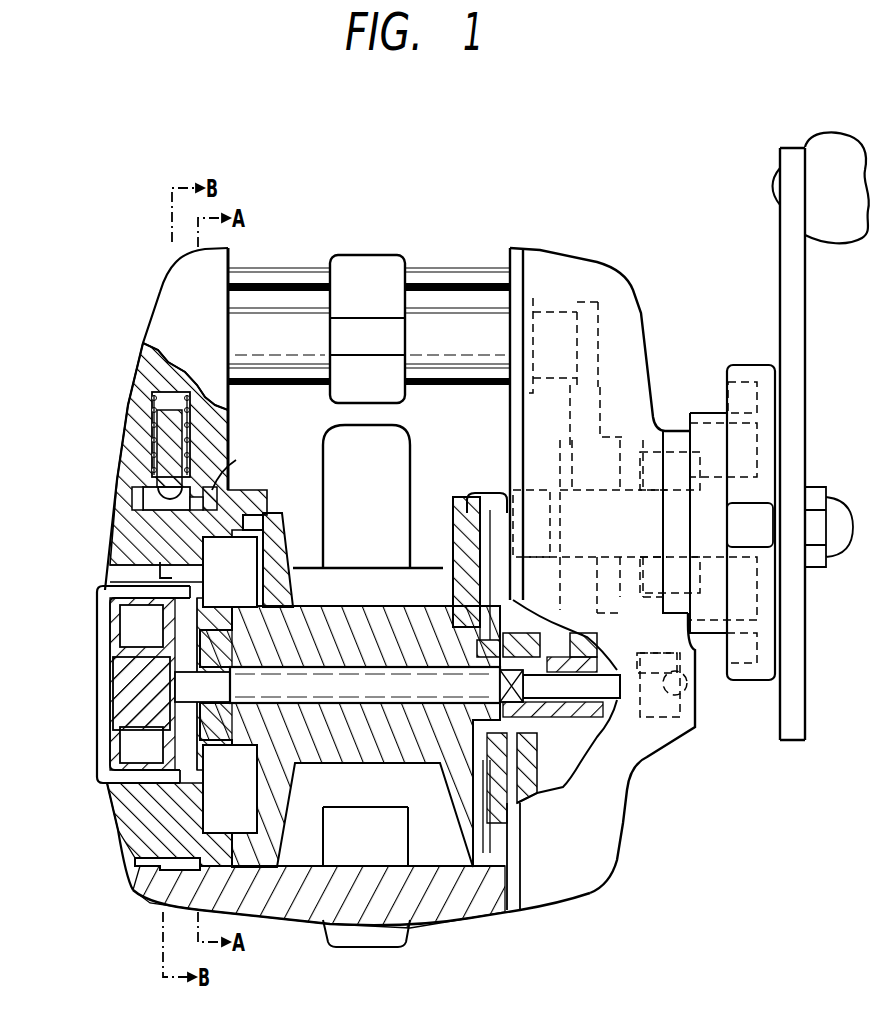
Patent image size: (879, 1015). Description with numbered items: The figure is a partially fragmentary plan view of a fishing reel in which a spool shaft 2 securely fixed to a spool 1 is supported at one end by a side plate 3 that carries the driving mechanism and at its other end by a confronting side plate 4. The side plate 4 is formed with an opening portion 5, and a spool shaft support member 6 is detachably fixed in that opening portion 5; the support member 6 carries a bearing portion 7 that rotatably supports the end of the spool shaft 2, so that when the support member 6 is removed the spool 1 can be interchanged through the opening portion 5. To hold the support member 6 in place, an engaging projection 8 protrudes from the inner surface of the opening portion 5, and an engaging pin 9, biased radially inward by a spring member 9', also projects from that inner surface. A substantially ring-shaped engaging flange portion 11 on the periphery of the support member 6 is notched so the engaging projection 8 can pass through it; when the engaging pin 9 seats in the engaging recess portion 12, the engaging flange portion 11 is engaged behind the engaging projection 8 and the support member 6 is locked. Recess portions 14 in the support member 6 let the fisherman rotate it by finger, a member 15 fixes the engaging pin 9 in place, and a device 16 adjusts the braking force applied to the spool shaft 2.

The spool 1 is at (428, 607).
The spool shaft 2 is at (307, 680).
The side plate 3 is at (607, 277).
The side plate 4 is at (170, 294).
The opening portion 5 is at (190, 863).
The spool shaft support member 6 is at (140, 543).
The bearing portion 7 is at (140, 697).
The engaging projection 8 is at (228, 463).
The engaging pin 9 is at (137, 442).
The spring member 9' is at (137, 434).
The engaging flange portion 11 is at (215, 490).
The engaging recess portion 12 is at (143, 500).
The recess portions 14 is at (140, 528).
The member for fixing the engaging pin 15 is at (150, 383).
The braking force adjusting device 16 is at (110, 652).